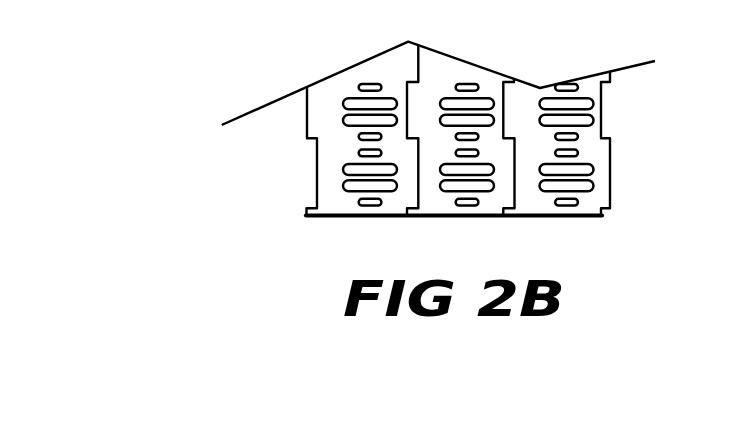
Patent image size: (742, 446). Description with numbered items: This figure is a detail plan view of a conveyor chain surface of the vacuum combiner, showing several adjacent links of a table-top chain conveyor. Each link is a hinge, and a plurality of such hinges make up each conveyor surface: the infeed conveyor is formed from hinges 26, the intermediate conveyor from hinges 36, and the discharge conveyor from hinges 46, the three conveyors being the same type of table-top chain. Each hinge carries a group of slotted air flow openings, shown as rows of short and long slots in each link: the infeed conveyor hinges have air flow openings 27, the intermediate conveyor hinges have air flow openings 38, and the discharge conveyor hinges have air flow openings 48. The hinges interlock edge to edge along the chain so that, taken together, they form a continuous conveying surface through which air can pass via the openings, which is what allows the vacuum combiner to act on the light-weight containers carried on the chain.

The hinge 26 is at (211, 158).
The hinge 36 is at (211, 158).
The hinge 46 is at (317, 130).
The air flow opening 27 is at (629, 145).
The air flow opening 38 is at (629, 145).
The air flow opening 48 is at (585, 190).